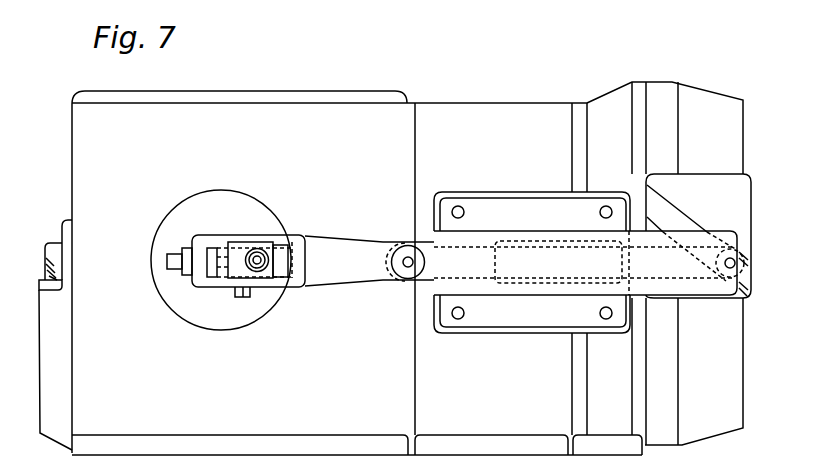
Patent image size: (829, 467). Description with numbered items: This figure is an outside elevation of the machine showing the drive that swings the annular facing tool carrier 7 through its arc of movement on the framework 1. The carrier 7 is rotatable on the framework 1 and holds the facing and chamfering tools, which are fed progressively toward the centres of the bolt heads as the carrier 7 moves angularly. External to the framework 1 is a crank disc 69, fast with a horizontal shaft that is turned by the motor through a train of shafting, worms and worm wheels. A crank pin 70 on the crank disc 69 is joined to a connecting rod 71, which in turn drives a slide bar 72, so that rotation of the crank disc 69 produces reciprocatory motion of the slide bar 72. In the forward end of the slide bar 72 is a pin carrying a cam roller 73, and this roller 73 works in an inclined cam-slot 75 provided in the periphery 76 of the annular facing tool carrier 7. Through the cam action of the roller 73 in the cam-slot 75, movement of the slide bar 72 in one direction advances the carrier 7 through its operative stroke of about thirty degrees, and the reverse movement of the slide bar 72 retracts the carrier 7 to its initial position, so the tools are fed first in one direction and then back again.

The annular facing tool carrier 7 is at (730, 392).
The framework 1 is at (58, 390).
The crank disc 69 is at (202, 208).
The crank pin 70 is at (264, 250).
The connecting rod 71 is at (348, 250).
The slide bar 72 is at (523, 263).
The cam roller 73 is at (738, 265).
The inclined cam-slot 75 is at (680, 218).
The periphery of the annular facing tool carrier 76 is at (737, 217).